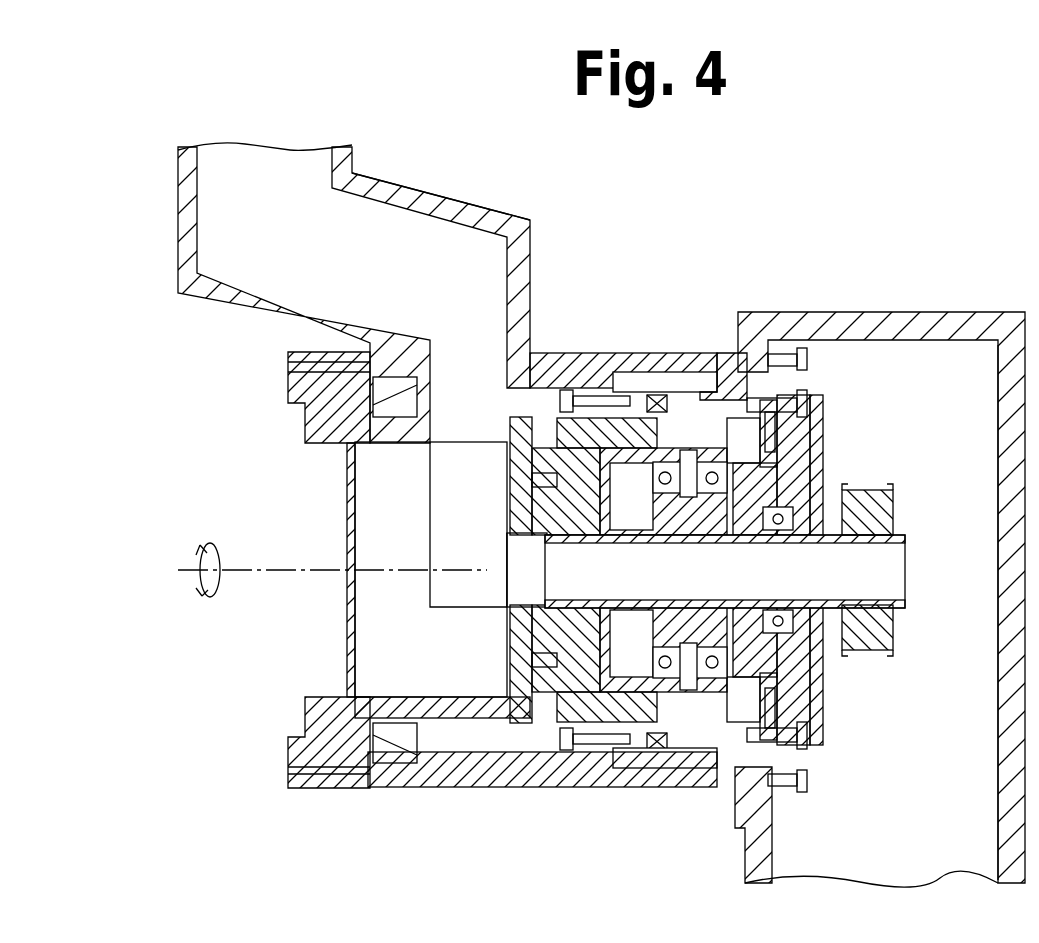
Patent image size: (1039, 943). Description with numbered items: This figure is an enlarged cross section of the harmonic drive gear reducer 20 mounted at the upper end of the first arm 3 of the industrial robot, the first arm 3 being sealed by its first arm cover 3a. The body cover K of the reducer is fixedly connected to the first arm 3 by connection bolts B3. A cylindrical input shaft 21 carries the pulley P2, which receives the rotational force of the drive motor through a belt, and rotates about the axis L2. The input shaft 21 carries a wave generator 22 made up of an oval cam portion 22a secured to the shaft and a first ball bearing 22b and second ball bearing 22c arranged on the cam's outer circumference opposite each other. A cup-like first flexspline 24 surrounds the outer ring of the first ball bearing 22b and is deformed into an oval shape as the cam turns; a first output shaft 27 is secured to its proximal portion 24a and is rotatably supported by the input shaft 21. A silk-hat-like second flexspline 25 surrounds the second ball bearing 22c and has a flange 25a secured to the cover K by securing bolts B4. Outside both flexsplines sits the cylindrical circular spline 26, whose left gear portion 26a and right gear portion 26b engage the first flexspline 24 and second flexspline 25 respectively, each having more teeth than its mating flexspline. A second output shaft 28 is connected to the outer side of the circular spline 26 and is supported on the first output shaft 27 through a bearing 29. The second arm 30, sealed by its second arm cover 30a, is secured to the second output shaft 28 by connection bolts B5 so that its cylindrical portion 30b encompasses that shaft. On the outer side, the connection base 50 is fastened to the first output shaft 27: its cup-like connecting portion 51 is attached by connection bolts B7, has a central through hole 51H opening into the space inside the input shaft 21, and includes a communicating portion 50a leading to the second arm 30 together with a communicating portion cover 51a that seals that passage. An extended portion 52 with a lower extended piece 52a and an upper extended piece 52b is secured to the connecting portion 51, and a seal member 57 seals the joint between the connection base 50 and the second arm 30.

The second arm 30 is at (532, 268).
The second arm cover 30a is at (482, 205).
The cylindrical portion 30b is at (690, 352).
The second output shaft 28 is at (640, 376).
The body cover K is at (728, 378).
The first arm 3 is at (932, 312).
The first arm cover 3a is at (1000, 312).
The connection bolts B3 is at (808, 358).
The securing bolts B4 is at (808, 398).
The connection bolts B5 is at (560, 401).
The connection bolts B7 is at (540, 480).
The harmonic drive gear reducer 20 is at (852, 450).
The input shaft 21 is at (750, 540).
The wave generator 22 is at (646, 540).
The cam portion 22a is at (702, 540).
The first ball bearing 22b is at (632, 496).
The second ball bearing 22c is at (763, 570).
The first flexspline 24 is at (612, 540).
The proximal portion 24a is at (576, 540).
The second flexspline 25 is at (752, 433).
The flange 25a is at (800, 570).
The circular spline 26 is at (690, 752).
The left gear portion 26a is at (631, 643).
The right gear portion 26b is at (749, 706).
The first output shaft 27 is at (527, 570).
The bearing 29 is at (636, 732).
The connection base 50 is at (314, 617).
The communicating portion 50a is at (432, 480).
The connecting portion 51 is at (508, 688).
The communicating portion cover 51a is at (347, 460).
The through hole 51H is at (512, 602).
The extended portion 52 is at (281, 699).
The lower extended piece 52a is at (288, 750).
The upper extended piece 52b is at (290, 385).
The seal member 57 is at (394, 764).
The axis L2 is at (270, 550).
The pulley P2 is at (895, 622).